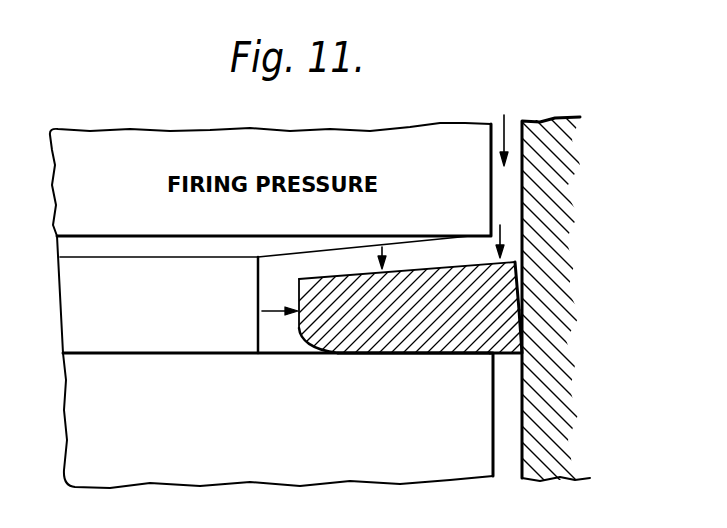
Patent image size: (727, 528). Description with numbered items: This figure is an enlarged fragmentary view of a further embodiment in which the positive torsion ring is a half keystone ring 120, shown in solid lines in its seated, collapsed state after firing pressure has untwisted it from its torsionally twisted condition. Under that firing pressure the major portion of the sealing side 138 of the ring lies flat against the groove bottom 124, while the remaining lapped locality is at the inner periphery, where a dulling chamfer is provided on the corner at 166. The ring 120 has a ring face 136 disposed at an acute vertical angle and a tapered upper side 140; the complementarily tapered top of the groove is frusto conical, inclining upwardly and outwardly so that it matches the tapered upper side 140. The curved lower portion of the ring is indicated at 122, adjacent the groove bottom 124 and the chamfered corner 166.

The half keystone ring 120 is at (440, 306).
The curved lower surface 122 is at (322, 354).
The groove bottom 124 is at (157, 352).
The ring face 136 is at (522, 268).
The sealing side 138 is at (509, 358).
The tapered upper side 140 is at (443, 267).
The dulling chamfer corner 166 is at (302, 333).